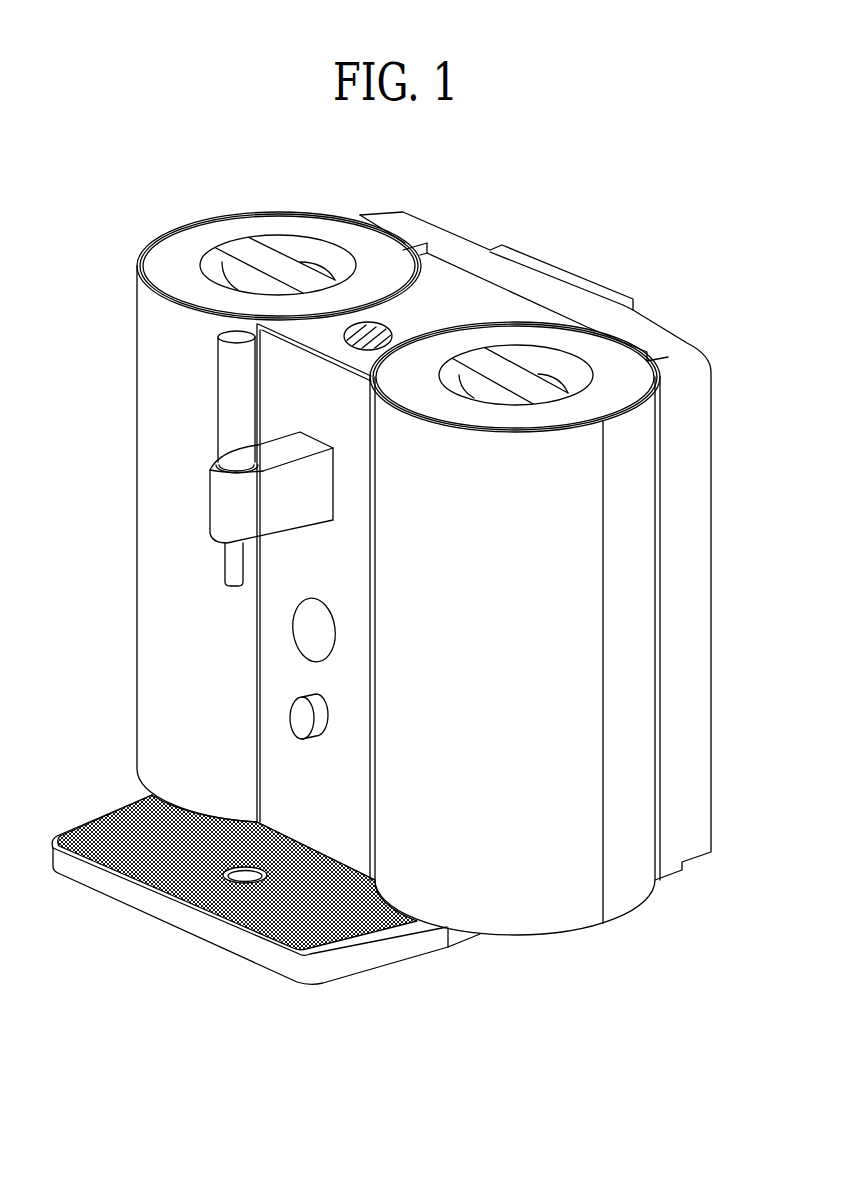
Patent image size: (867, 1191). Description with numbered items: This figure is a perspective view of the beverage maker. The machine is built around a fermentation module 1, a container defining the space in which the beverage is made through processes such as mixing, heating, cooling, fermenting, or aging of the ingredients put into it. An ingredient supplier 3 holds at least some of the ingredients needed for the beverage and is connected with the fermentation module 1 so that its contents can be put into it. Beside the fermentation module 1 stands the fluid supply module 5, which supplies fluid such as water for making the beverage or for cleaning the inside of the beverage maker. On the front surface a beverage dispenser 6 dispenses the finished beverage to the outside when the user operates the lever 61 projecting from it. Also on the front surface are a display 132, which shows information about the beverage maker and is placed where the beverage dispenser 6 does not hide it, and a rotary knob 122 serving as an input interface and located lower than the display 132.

The fermentation module 1 is at (201, 214).
The ingredient supplier 3 is at (498, 293).
The fluid supply module 5 is at (667, 518).
The beverage dispenser 6 is at (201, 497).
The lever 61 is at (232, 395).
The display 132 is at (303, 629).
The rotary knob 122 is at (297, 722).